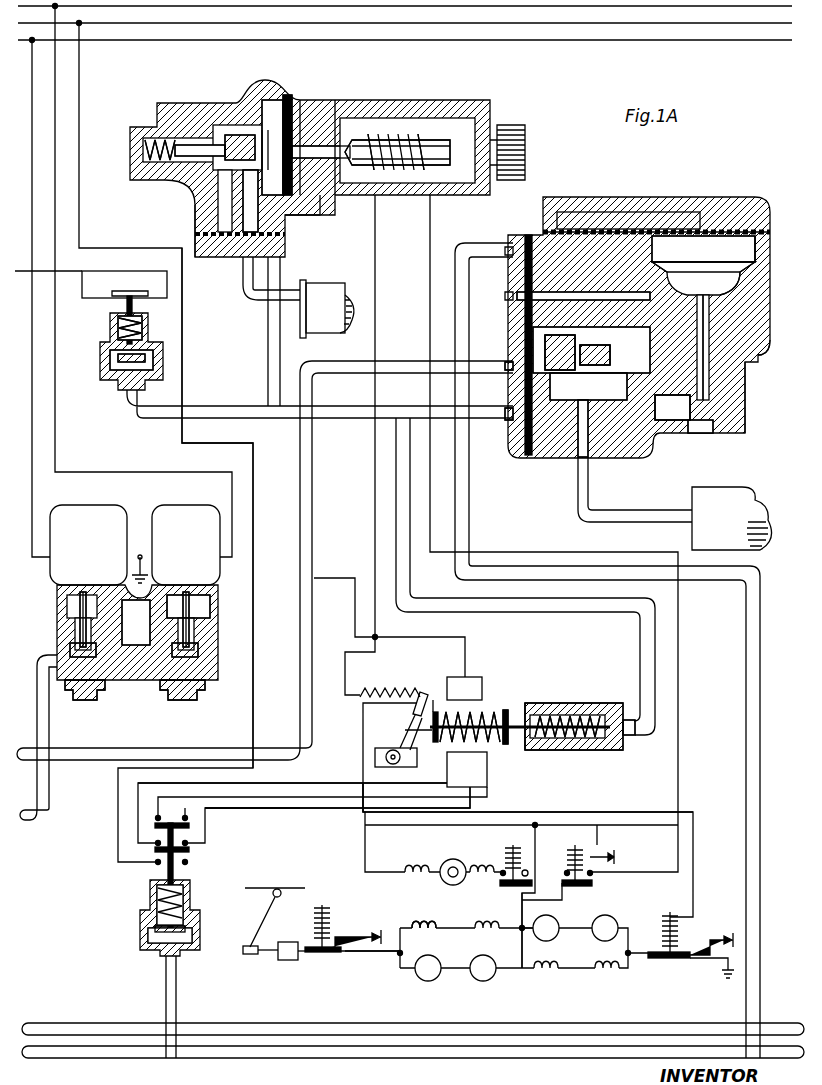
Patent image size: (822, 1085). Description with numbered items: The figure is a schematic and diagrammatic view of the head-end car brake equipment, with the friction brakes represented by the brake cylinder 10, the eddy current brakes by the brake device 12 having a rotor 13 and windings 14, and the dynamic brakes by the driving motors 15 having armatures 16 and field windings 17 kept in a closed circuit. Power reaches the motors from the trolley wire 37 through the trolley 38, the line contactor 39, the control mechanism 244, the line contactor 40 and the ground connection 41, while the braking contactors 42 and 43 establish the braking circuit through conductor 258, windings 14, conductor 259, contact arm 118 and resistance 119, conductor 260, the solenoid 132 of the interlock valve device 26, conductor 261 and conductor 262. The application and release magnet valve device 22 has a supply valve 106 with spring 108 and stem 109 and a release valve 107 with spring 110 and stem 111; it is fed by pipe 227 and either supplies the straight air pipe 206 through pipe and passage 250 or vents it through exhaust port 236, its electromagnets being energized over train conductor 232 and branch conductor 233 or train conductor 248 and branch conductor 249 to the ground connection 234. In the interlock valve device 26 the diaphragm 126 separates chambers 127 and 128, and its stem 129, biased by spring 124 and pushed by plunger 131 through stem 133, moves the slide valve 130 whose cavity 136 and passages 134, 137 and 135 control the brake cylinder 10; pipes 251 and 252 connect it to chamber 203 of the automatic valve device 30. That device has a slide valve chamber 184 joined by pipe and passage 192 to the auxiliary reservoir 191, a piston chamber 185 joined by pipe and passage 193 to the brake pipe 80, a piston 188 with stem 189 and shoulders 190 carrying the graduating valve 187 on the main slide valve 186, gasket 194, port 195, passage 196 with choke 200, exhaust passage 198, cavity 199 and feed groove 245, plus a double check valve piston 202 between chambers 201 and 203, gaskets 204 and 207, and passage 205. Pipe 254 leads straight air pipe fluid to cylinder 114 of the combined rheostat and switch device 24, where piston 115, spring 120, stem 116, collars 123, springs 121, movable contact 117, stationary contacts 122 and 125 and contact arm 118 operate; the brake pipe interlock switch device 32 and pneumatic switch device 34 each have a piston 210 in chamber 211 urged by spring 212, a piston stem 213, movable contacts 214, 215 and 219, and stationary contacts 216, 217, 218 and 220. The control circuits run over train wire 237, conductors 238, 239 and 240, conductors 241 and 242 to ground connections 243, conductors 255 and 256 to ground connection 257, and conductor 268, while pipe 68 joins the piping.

The train conductor 232 is at (196, 7).
The train wire 237 is at (262, 24).
The train conductor 248 is at (325, 41).
The conductor 238 is at (79, 158).
The branch conductor 233 is at (55, 185).
The branch conductor 249 is at (32, 212).
The conductor 239 is at (130, 247).
The conductor 268 is at (100, 271).
The movable contact 219 is at (128, 291).
The stationary contacts 220 is at (118, 296).
The pneumatic switch device 34 is at (100, 346).
The chamber 211 is at (110, 378).
The spring 212 is at (150, 327).
The piston stem 213 is at (148, 345).
The piston 210 is at (162, 372).
The interlock valve device 26 is at (406, 89).
The diaphragm 126 is at (272, 95).
The chamber 127 is at (285, 110).
The chamber 128 is at (310, 110).
The stem 133 is at (330, 150).
The solenoid 132 is at (412, 135).
The plunger 131 is at (450, 138).
The stem 129 is at (185, 145).
The spring 124 is at (152, 140).
The slide valve 130 is at (232, 142).
The cavity 136 is at (265, 145).
The passage 134 is at (205, 196).
The exhaust passage 137 is at (240, 262).
The pipe and passage 135 is at (250, 262).
The pipe 252 is at (275, 355).
The brake cylinder 10 is at (340, 335).
The straight air pipe 206 is at (420, 347).
The pipe 251 is at (372, 425).
The pipe 254 is at (392, 553).
The conductor 260 is at (375, 510).
The conductor 261 is at (428, 318).
The pipe and passage 193 is at (512, 247).
The automatic valve device 30 is at (741, 195).
The gasket 194 is at (760, 230).
The piston chamber 185 is at (765, 248).
The piston 188 is at (757, 265).
The stem 189 is at (745, 285).
The main slide valve 186 is at (720, 310).
The slide valve chamber 184 is at (735, 360).
The graduating valve 187 is at (735, 385).
The shoulders 190 is at (735, 413).
The exhaust passage 198 is at (580, 297).
The feed groove 245 is at (640, 295).
The piston 202 is at (533, 335).
The chamber 203 is at (540, 345).
The gasket 207 is at (560, 345).
The chamber 201 is at (590, 345).
The cavity 199 is at (655, 360).
The gasket 204 is at (515, 405).
The passage 205 is at (520, 425).
The passage 196 is at (625, 400).
The port 195 is at (672, 432).
The pipe and passage 192 is at (578, 470).
The choke 200 is at (625, 455).
The auxiliary reservoir 191 is at (745, 490).
The application and release magnet valve device 22 is at (234, 639).
The ground connection 234 is at (145, 560).
The stem 109 is at (70, 607).
The supply valve 106 is at (75, 650).
The stem 111 is at (190, 600).
The exhaust port 236 is at (200, 605).
The release valve 107 is at (200, 650).
The spring 108 is at (92, 695).
The pipe and passage 250 is at (135, 690).
The spring 110 is at (182, 692).
The pipe 227 is at (40, 735).
The stationary contact 216 is at (158, 805).
The movable contact 214 is at (155, 827).
The movable contact 215 is at (155, 850).
The stationary contact 217 is at (190, 840).
The conductor 256 is at (282, 810).
The stationary contact 218 is at (190, 862).
The brake pipe interlock switch device 32 is at (205, 957).
The trolley wire 37 is at (253, 888).
The trolley 38 is at (258, 945).
The control mechanism 244 is at (285, 962).
The line contactor 39 is at (330, 902).
The ground connections 243 is at (360, 935).
The pipe 68 is at (130, 1023).
The brake pipe 80 is at (400, 1060).
The brake device 12 is at (438, 859).
The conductors 242 is at (412, 815).
The windings 14 is at (428, 880).
The rotor 13 is at (460, 855).
The braking contactor 42 is at (510, 848).
The ground connection 257 is at (570, 855).
The braking contactor 43 is at (585, 850).
The conductor 258 is at (515, 918).
The driving motors 15 is at (475, 971).
The field winding 17 is at (420, 929).
The armature 16 is at (428, 981).
The conductor 262 is at (545, 925).
The line contactor 40 is at (665, 918).
The ground connection 41 is at (708, 968).
The conductor 240 is at (455, 640).
The resistance 119 is at (395, 690).
The stationary contacts 125 is at (435, 705).
The combined rheostat and switch device 24 is at (515, 700).
The stationary contacts 122 is at (490, 712).
The collars 123 is at (515, 725).
The pneumatic cylinder 114 is at (560, 708).
The contact arm 118 is at (410, 716).
The conductor 259 is at (363, 770).
The conductor 255 is at (363, 783).
The movable contact 117 is at (450, 750).
The springs 121 is at (505, 745).
The stem 116 is at (545, 750).
The spring 120 is at (585, 750).
The piston 115 is at (625, 750).
The conductor 241 is at (470, 798).